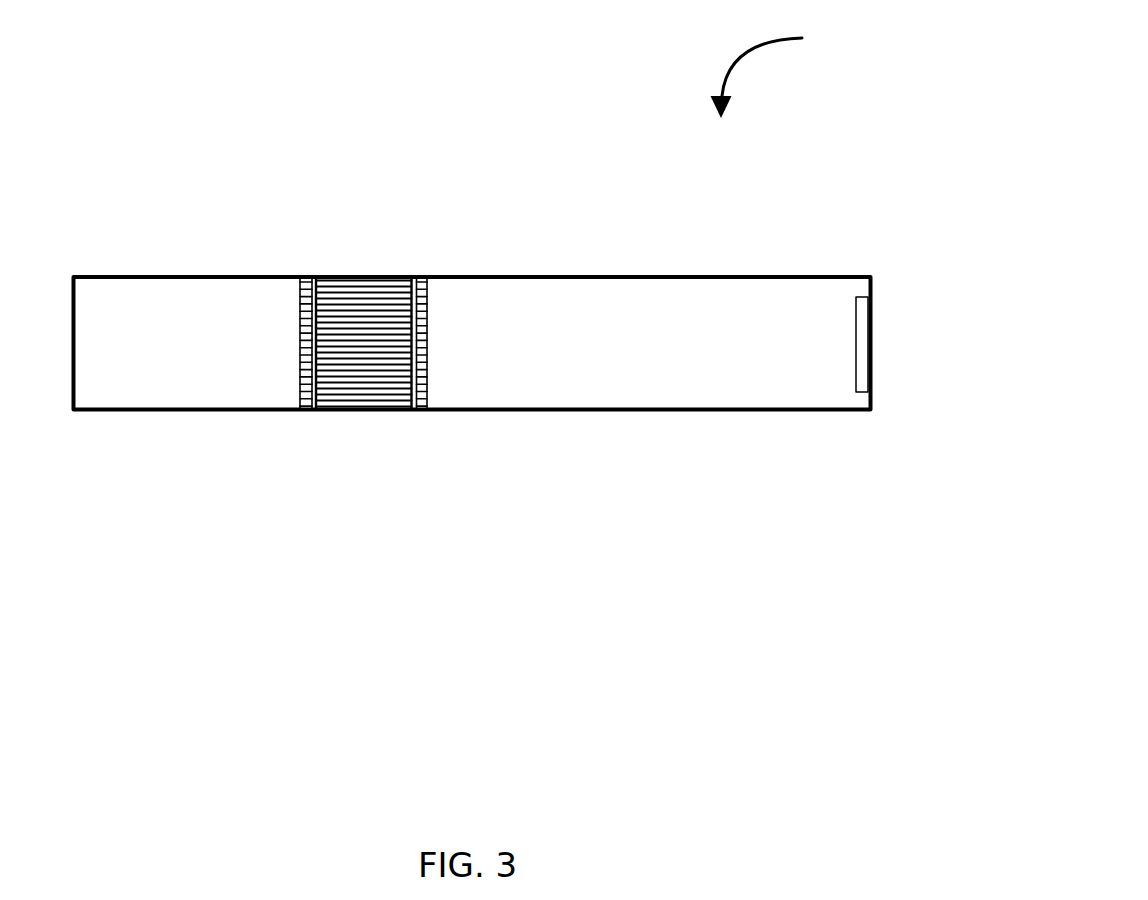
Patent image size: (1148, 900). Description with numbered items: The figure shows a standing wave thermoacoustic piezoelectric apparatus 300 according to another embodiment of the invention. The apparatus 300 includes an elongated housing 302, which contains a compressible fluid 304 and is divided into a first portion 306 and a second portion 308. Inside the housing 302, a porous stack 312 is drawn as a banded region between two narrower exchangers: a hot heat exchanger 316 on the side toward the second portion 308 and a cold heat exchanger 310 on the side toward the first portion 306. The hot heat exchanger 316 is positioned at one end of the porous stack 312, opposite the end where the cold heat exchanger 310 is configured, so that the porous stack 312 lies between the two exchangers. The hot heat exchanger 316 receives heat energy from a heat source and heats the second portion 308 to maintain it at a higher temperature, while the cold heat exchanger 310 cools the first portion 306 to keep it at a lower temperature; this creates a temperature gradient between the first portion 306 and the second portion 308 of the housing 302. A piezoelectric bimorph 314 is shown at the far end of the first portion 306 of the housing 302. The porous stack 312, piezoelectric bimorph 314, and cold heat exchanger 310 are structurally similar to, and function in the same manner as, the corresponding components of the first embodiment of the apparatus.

The standing wave thermoacoustic piezoelectric apparatus 300 is at (780, 73).
The housing 302 is at (762, 272).
The compressible fluid 304 is at (512, 298).
The first portion 306 is at (649, 343).
The second portion 308 is at (187, 343).
The cold heat exchanger 310 is at (430, 273).
The porous stack 312 is at (365, 283).
The piezoelectric bimorph 314 is at (862, 372).
The hot heat exchanger 316 is at (312, 272).